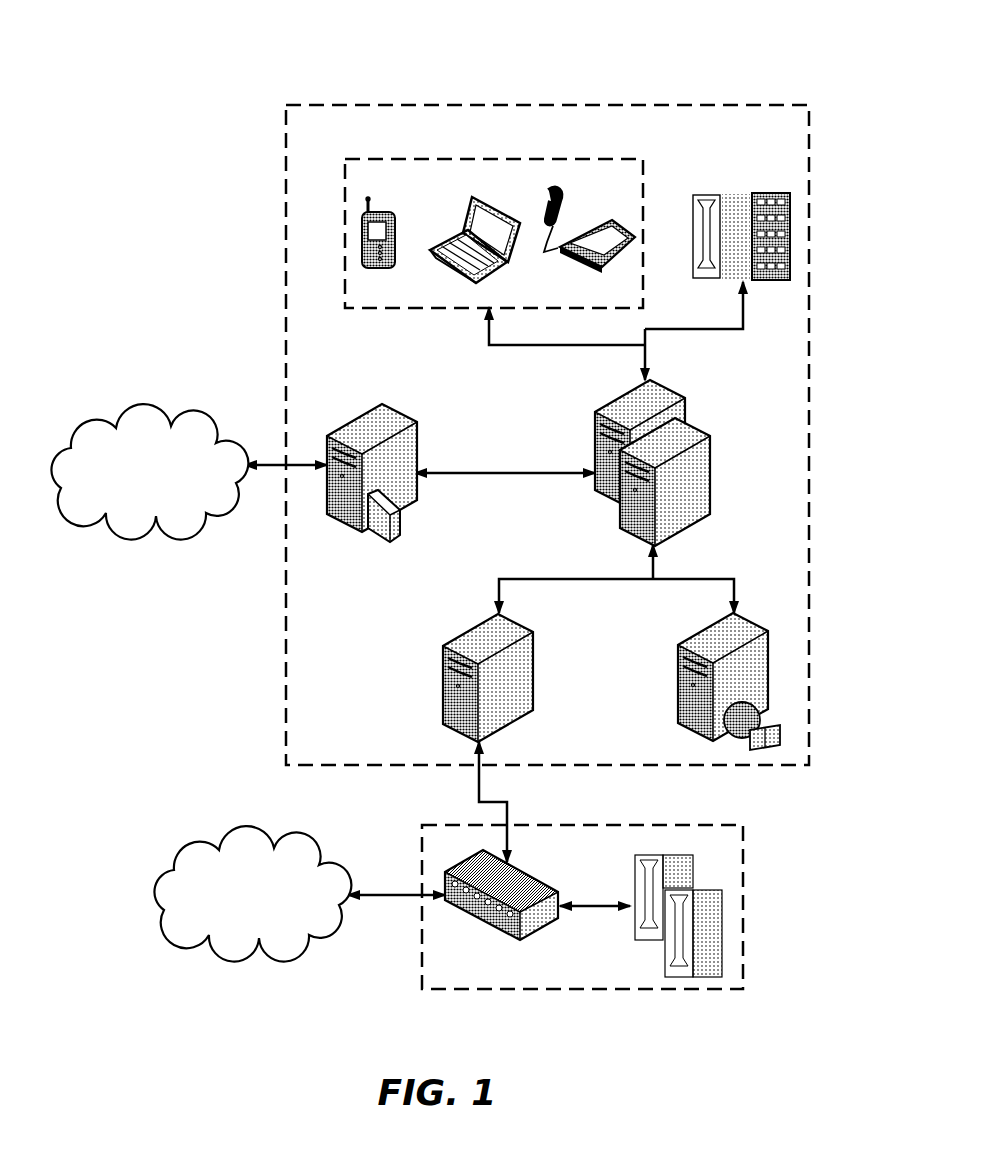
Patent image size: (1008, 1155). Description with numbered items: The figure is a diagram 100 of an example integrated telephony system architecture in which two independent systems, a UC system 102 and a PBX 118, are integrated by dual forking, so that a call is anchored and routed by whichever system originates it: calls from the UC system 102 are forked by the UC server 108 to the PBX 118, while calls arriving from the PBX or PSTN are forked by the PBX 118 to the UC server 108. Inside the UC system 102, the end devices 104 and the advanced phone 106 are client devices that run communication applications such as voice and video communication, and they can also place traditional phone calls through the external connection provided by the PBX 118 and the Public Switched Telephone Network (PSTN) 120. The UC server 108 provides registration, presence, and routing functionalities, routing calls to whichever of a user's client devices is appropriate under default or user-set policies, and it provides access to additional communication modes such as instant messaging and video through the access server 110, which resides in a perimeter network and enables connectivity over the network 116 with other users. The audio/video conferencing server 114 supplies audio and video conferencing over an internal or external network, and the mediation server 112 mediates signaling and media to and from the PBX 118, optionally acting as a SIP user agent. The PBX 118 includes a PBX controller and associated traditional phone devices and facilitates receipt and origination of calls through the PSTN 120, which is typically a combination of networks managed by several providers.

The diagram 100 is at (685, 50).
The UC system 102 is at (317, 97).
The end devices 104 is at (395, 155).
The phone 106 is at (743, 185).
The UC server 108 is at (593, 408).
The access server 110 is at (392, 390).
The mediation server 112 is at (483, 612).
The audio/video conferencing server 114 is at (675, 640).
The network 116 is at (128, 403).
The PBX system 118 is at (443, 815).
The Public Switched Telephone Network (PSTN) 120 is at (202, 837).